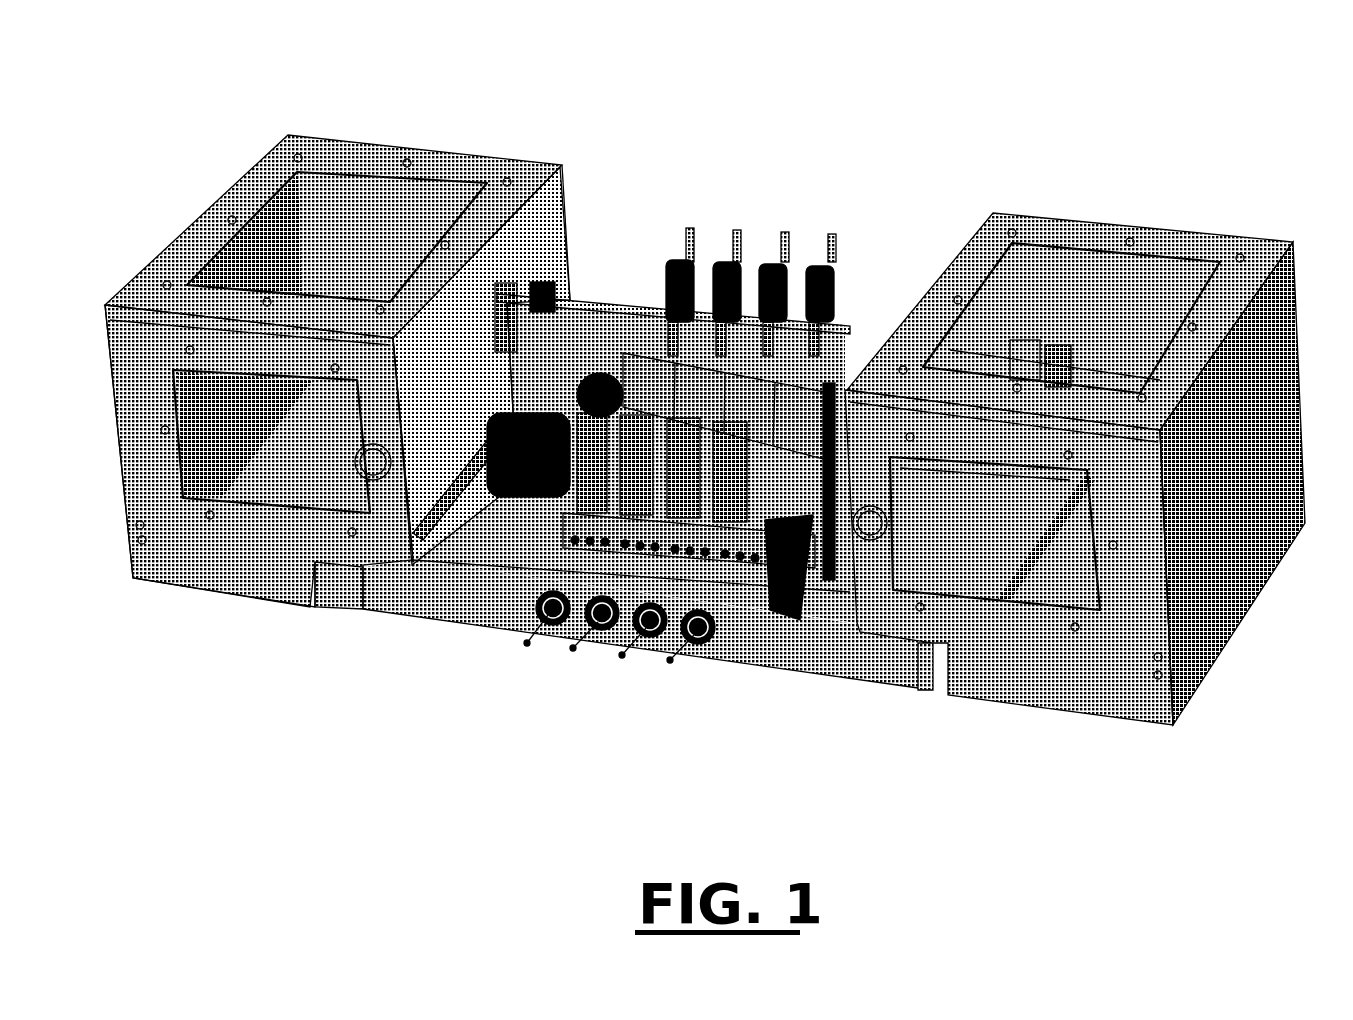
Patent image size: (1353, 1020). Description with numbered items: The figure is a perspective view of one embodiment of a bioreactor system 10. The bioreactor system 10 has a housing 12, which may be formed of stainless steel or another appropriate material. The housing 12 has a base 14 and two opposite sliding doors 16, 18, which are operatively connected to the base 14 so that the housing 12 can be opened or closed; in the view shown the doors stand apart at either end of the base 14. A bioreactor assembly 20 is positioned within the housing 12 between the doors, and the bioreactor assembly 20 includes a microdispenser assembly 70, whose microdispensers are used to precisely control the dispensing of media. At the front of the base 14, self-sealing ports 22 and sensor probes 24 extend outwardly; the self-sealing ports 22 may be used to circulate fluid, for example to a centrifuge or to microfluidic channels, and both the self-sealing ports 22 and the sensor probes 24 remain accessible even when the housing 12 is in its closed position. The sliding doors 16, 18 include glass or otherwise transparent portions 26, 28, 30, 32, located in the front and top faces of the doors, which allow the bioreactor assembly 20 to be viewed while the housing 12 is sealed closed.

The bioreactor system 10 is at (693, 451).
The housing 12 is at (632, 300).
The base 14 is at (482, 520).
The sliding door 16 is at (326, 385).
The sliding door 18 is at (1075, 513).
The bioreactor assembly 20 is at (475, 620).
The self-sealing ports 22 is at (553, 626).
The sensor probes 24 is at (527, 643).
The transparent portion 26 is at (233, 477).
The transparent portion 28 is at (345, 183).
The transparent portion 30 is at (1052, 583).
The transparent portion 32 is at (1088, 270).
The microdispenser assembly 70 is at (878, 262).